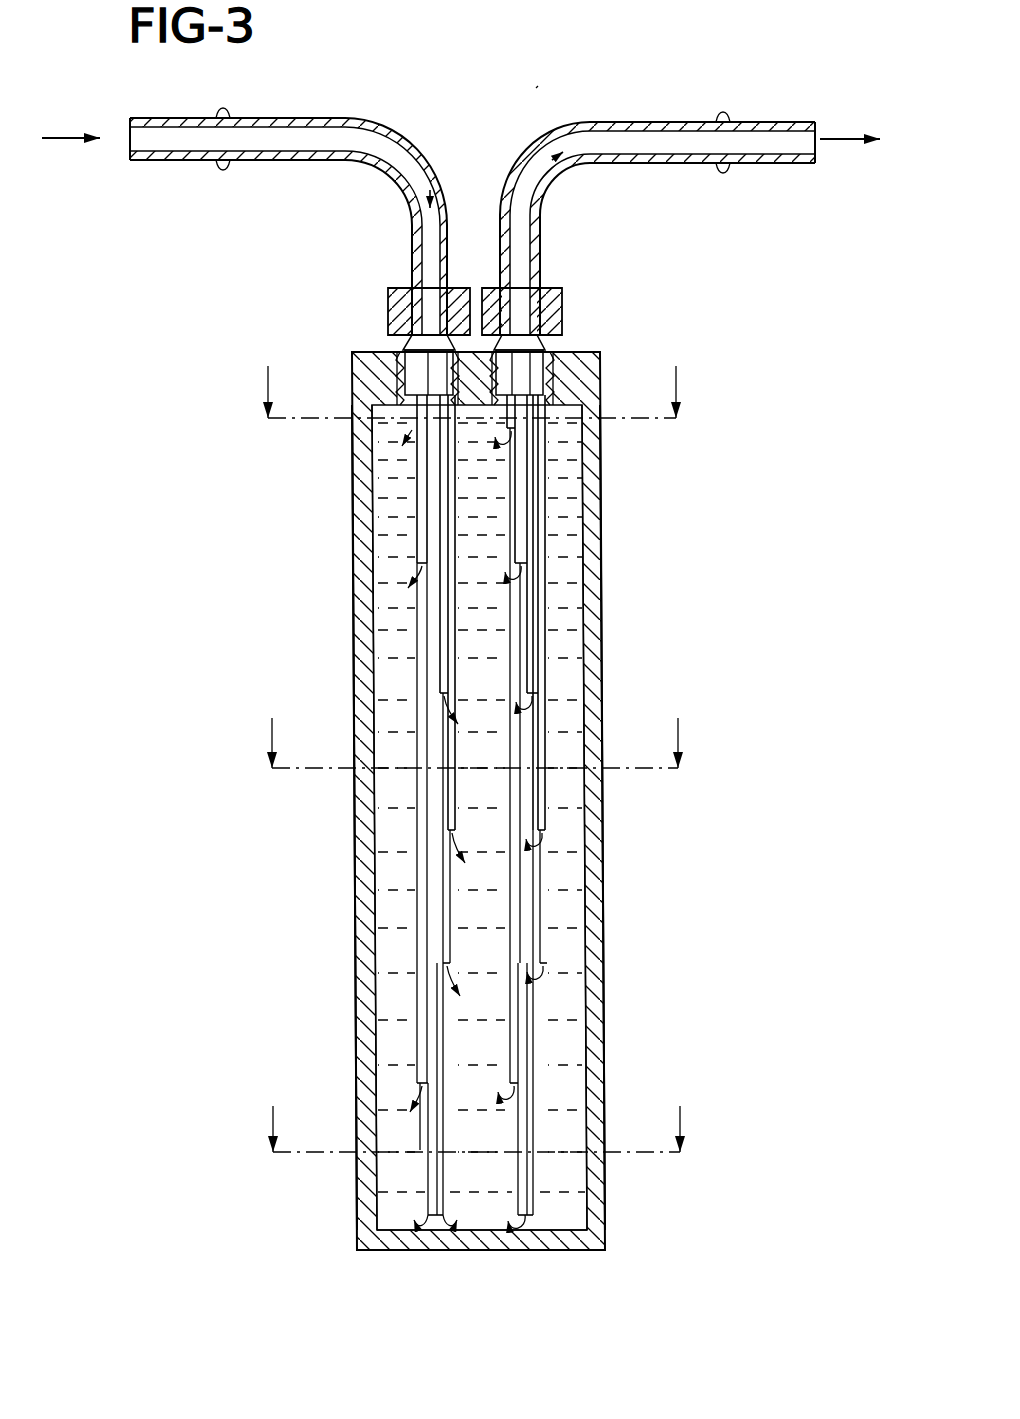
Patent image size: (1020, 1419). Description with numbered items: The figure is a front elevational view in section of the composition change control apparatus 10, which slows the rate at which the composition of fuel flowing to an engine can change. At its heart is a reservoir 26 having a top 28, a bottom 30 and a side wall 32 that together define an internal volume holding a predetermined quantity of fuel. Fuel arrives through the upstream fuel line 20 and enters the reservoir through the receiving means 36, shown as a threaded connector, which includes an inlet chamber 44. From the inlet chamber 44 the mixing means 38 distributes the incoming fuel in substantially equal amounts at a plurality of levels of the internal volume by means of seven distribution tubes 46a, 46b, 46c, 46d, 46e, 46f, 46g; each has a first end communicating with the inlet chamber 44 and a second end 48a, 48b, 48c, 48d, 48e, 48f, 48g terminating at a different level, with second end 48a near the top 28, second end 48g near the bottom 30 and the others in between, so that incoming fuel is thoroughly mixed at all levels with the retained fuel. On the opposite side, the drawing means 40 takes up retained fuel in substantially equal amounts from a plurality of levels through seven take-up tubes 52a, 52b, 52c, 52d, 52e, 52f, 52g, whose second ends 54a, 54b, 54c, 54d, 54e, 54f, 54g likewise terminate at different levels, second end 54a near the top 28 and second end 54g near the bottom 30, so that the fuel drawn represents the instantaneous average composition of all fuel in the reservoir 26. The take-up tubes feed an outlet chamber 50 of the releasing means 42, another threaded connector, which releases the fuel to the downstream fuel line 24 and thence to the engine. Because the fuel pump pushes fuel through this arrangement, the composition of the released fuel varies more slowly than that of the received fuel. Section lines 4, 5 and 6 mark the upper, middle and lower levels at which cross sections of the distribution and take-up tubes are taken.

The composition change control apparatus 10 is at (546, 74).
The upstream fuel line 20 is at (290, 163).
The downstream fuel line 24 is at (684, 165).
The reservoir 26 is at (240, 934).
The top 28 is at (592, 350).
The bottom 30 is at (480, 1251).
The side wall 32 is at (352, 902).
The receiving means 36 is at (392, 296).
The mixing means 38 is at (400, 681).
The drawing means 40 is at (560, 603).
The releasing means 42 is at (560, 300).
The inlet chamber 44 is at (402, 366).
The outlet chamber 50 is at (550, 366).
The distribution tube 46a is at (412, 426).
The distribution tube 46b is at (420, 522).
The distribution tube 46c is at (428, 632).
The distribution tube 46d is at (445, 798).
The distribution tube 46e is at (440, 946).
The distribution tube 46f is at (420, 1046).
The distribution tube 46g is at (427, 1168).
The second end 48a is at (412, 478).
The second end 48b is at (415, 585).
The second end 48c is at (447, 696).
The second end 48d is at (445, 836).
The second end 48e is at (440, 984).
The second end 48f is at (420, 1096).
The second end 48g is at (430, 1223).
The take-up tube 52a is at (506, 432).
The take-up tube 52b is at (527, 506).
The take-up tube 52c is at (540, 628).
The take-up tube 52d is at (540, 800).
The take-up tube 52e is at (540, 912).
The take-up tube 52f is at (538, 1046).
The take-up tube 52g is at (533, 1183).
The second end 54a is at (530, 456).
The second end 54b is at (524, 572).
The second end 54c is at (536, 700).
The second end 54d is at (550, 843).
The second end 54e is at (554, 967).
The second end 54f is at (530, 1100).
The second end 54g is at (540, 1223).
The section line 4- 4 is at (468, 376).
The section line 5- 5 is at (473, 726).
The section line 6- 6 is at (475, 1114).